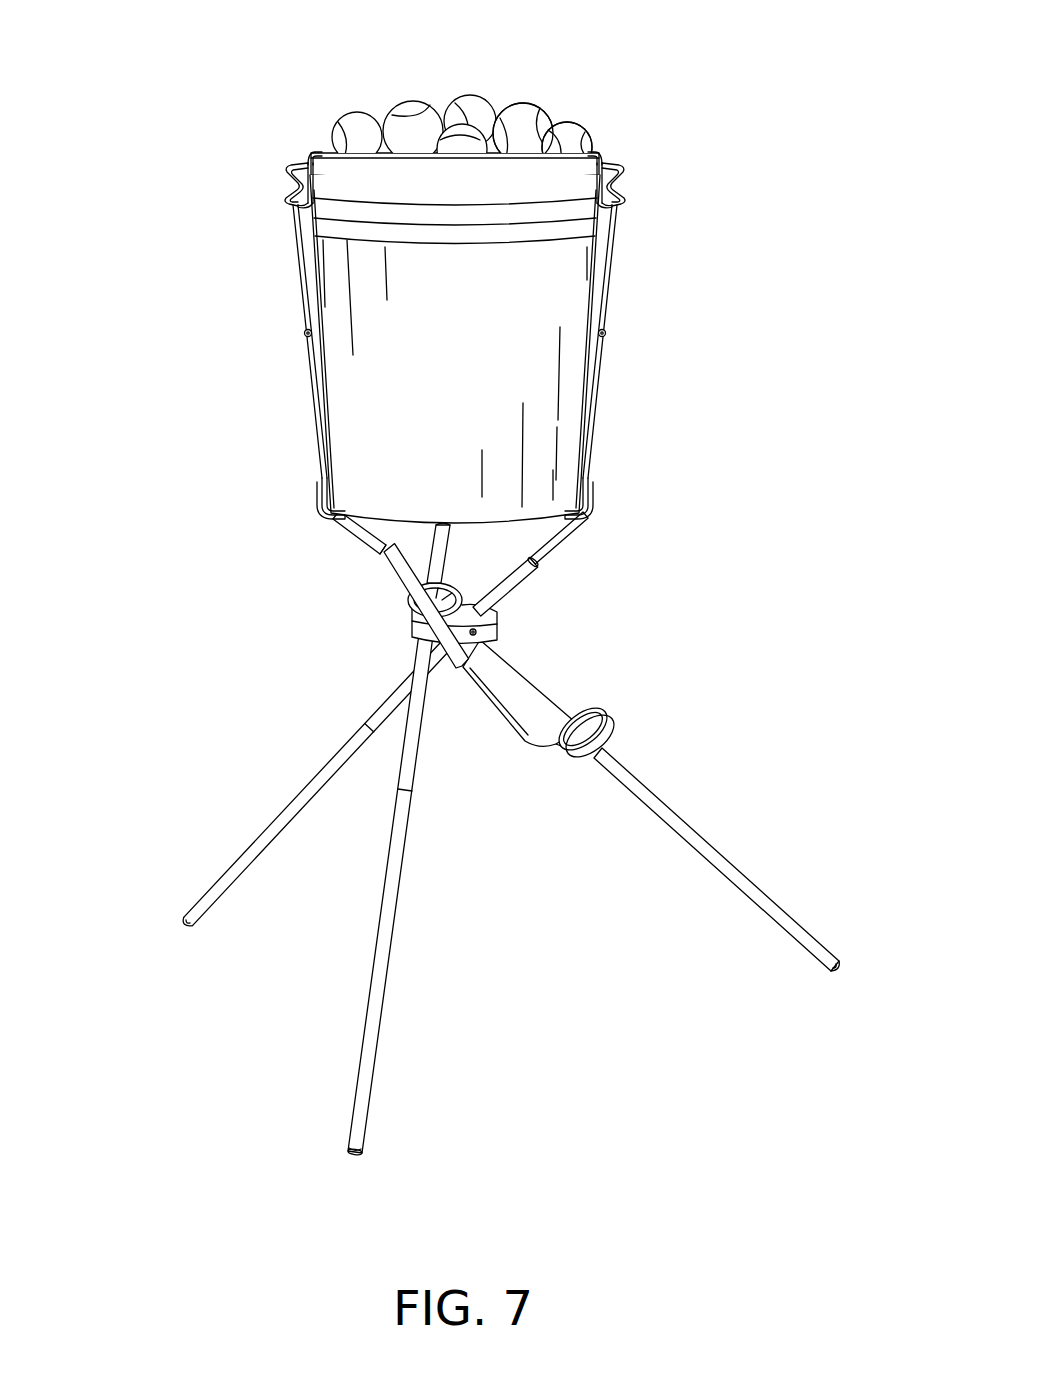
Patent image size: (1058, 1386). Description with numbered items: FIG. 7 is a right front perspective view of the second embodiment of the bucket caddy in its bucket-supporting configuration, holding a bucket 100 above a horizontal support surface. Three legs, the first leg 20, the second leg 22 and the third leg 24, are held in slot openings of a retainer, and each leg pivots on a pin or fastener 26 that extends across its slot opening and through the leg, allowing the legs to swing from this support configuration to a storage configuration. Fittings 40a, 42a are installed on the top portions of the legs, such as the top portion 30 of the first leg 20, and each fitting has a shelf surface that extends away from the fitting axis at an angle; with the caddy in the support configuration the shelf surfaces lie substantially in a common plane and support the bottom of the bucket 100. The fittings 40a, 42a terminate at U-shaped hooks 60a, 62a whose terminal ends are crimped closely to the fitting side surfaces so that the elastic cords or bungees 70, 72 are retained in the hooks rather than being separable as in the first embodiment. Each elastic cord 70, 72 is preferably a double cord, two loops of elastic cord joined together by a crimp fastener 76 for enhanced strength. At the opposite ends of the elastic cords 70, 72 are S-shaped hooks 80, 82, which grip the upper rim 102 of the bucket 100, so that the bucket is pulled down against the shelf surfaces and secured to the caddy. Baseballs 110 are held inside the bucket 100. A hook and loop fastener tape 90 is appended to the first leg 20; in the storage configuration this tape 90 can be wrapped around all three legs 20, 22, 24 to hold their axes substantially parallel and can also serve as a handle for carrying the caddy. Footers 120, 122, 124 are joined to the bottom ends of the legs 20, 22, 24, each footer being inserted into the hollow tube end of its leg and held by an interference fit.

The first leg 20 is at (748, 870).
The second leg 22 is at (262, 818).
The third leg 24 is at (375, 1010).
The pin or fastener 26 is at (500, 630).
The top portion of leg 30 is at (545, 680).
The fitting 40a is at (350, 543).
The fitting 42a is at (565, 545).
The U-shaped hook 60a is at (320, 497).
The U-shaped hook 62a is at (600, 497).
The elastic cord or bungee 70 is at (300, 300).
The elastic cord or bungee 72 is at (610, 385).
The crimp fastener 76 is at (300, 333).
The S-shaped hook 80 is at (302, 148).
The S-shaped hook 82 is at (627, 193).
The hook and loop fastener tape 90 is at (605, 730).
The bucket 100 is at (340, 277).
The upper rim of bucket 102 is at (360, 124).
The baseball 110 is at (548, 124).
The footer 120 is at (840, 963).
The footer 122 is at (178, 920).
The footer 124 is at (345, 1153).